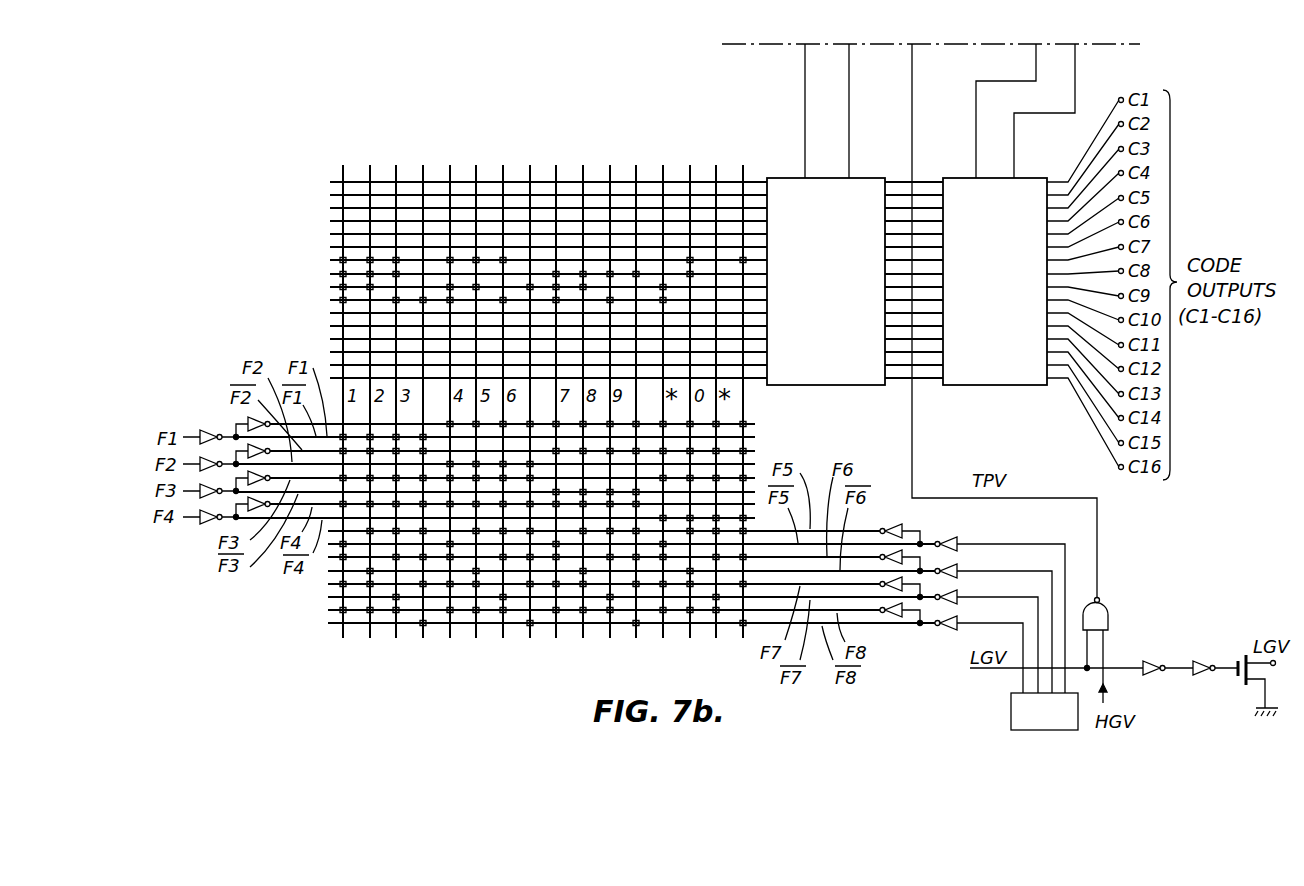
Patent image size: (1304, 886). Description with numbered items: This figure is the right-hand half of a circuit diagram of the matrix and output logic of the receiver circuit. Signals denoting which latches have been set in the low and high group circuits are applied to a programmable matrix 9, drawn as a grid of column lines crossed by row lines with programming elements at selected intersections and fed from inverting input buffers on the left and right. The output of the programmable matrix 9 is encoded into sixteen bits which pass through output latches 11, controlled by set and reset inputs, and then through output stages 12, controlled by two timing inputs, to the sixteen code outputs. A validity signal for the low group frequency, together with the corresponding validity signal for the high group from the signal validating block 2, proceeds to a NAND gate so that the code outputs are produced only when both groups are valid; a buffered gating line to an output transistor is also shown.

The programmable matrix 9 is at (317, 592).
The output latches 11 is at (826, 361).
The output stages 12 is at (1001, 361).
The signal validating block 2 is at (1044, 711).